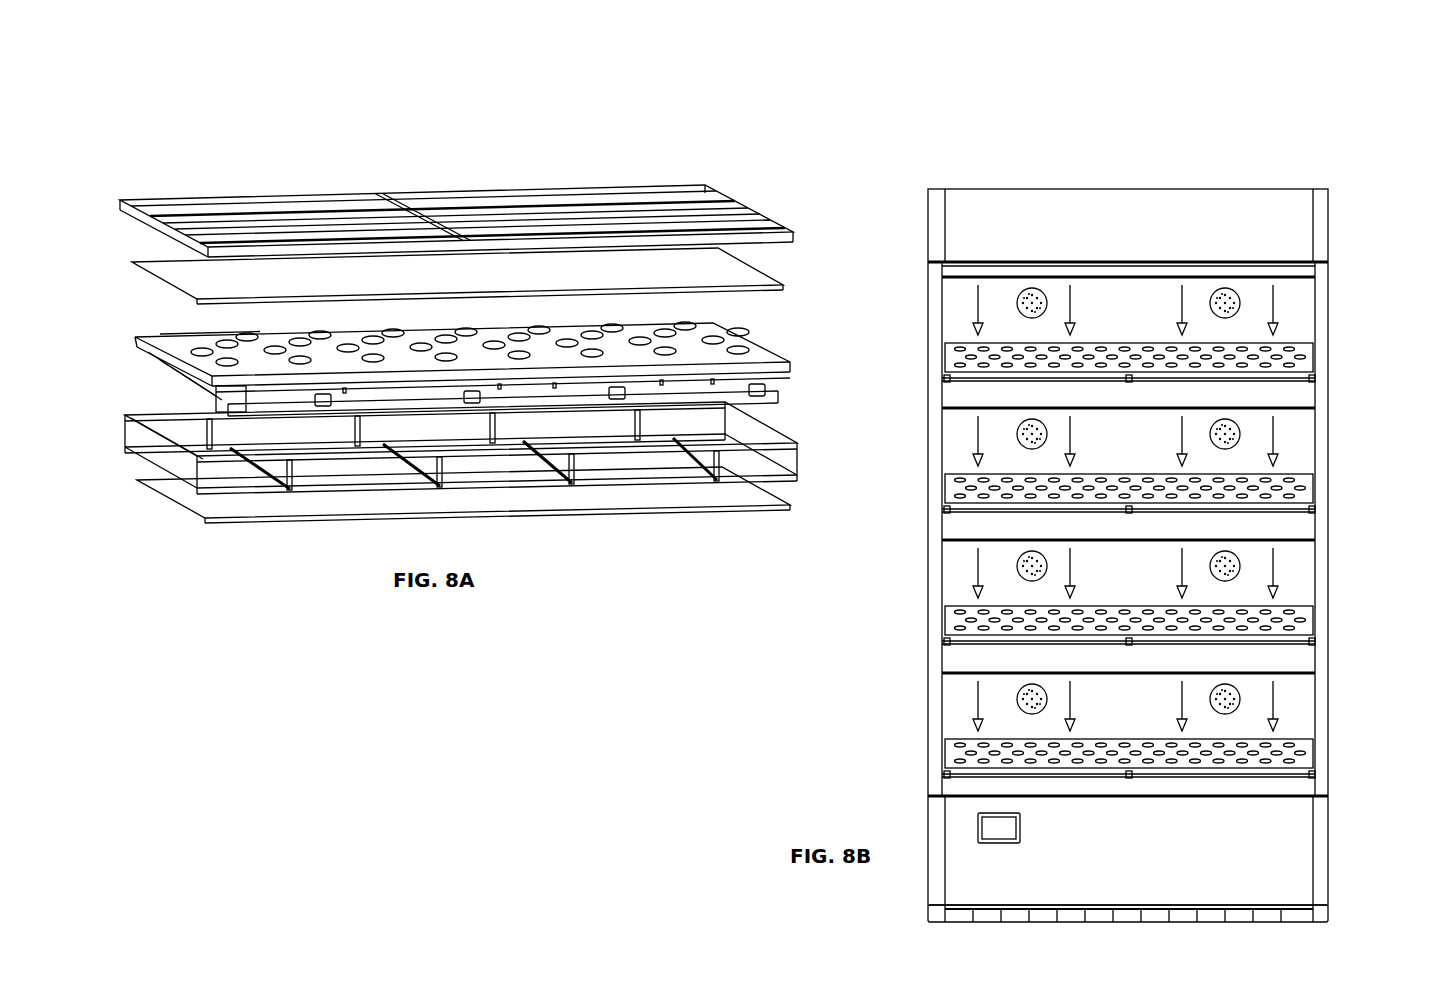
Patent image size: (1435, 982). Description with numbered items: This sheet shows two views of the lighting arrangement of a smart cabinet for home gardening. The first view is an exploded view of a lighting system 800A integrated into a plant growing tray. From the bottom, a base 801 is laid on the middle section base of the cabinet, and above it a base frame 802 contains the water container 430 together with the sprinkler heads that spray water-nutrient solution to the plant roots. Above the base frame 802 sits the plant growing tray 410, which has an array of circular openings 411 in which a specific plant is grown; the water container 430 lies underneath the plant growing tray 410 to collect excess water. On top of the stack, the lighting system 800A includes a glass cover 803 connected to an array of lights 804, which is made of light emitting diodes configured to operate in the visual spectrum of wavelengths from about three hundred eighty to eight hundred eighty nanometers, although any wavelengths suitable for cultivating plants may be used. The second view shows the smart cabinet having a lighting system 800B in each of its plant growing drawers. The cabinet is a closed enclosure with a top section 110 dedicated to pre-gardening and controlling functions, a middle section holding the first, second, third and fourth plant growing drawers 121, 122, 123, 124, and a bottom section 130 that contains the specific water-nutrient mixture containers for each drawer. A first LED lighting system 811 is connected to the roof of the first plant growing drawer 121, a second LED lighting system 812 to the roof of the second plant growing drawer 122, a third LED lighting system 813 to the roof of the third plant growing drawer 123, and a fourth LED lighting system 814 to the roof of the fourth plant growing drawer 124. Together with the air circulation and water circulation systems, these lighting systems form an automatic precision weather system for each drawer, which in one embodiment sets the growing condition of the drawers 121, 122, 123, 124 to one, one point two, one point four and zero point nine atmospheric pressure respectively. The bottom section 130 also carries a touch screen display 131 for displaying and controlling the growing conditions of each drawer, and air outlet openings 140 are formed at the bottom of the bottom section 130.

In FIG. 8A, the lighting system 800A is at (403, 132).
In FIG. 8A, the array of lights 804 is at (760, 212).
In FIG. 8A, the glass cover 803 is at (775, 283).
In FIG. 8A, the plant growing tray 410 is at (760, 347).
In FIG. 8A, the circular openings 411 is at (178, 333).
In FIG. 8A, the water container 430 is at (762, 398).
In FIG. 8A, the base frame 802 is at (790, 438).
In FIG. 8A, the base 801 is at (790, 505).
In FIG. 8B, the lighting system 800B is at (1140, 146).
In FIG. 8B, the top section 110 is at (1332, 222).
In FIG. 8B, the first LED lighting system 811 is at (1297, 278).
In FIG. 8B, the second LED lighting system 812 is at (1297, 410).
In FIG. 8B, the third LED lighting system 813 is at (1297, 541).
In FIG. 8B, the fourth LED lighting system 814 is at (1297, 673).
In FIG. 8B, the first plant growing drawer 121 is at (1332, 333).
In FIG. 8B, the second plant growing drawer 122 is at (1332, 462).
In FIG. 8B, the third plant growing drawer 123 is at (1332, 593).
In FIG. 8B, the fourth plant growing drawer 124 is at (1332, 723).
In FIG. 8B, the bottom section 130 is at (1332, 857).
In FIG. 8B, the touch screen display 131 is at (1022, 826).
In FIG. 8B, the air outlet openings 140 is at (1220, 922).